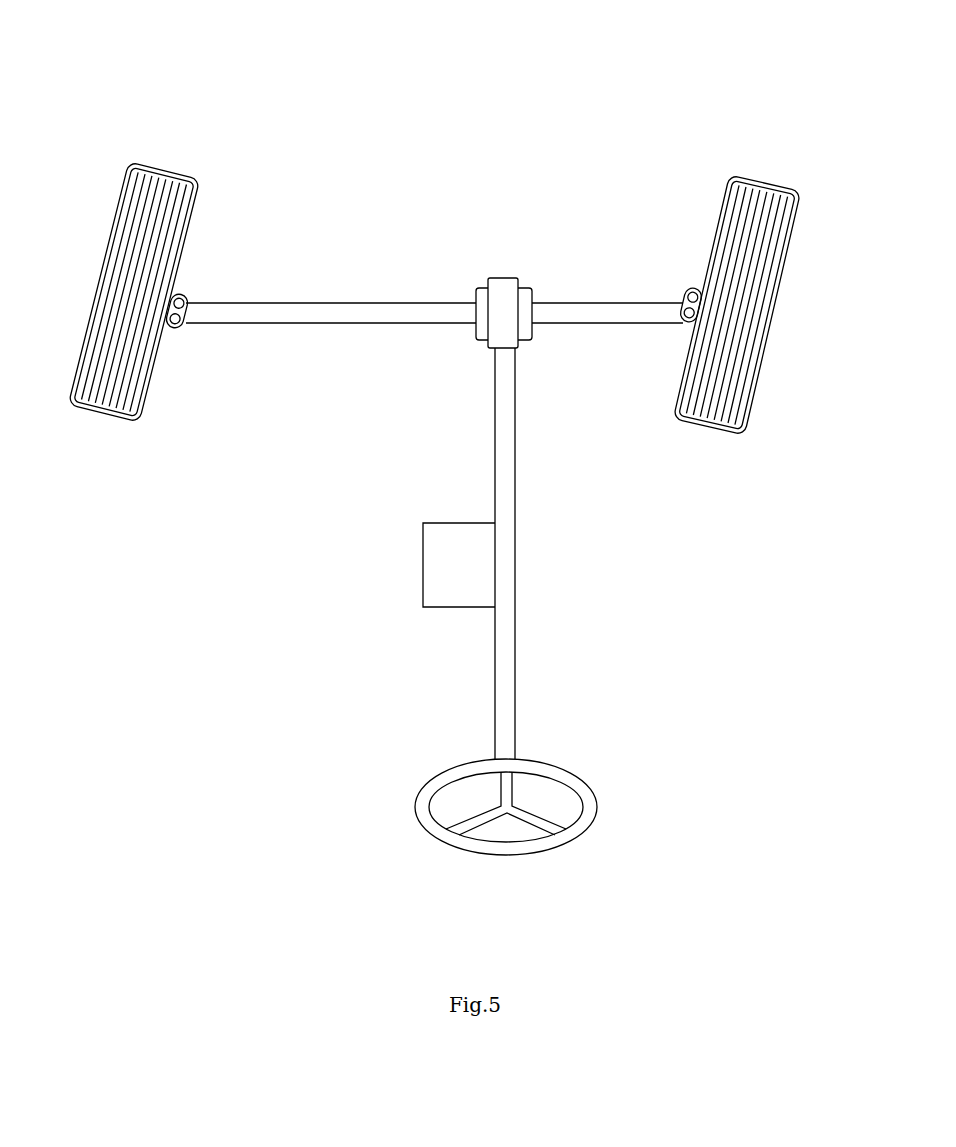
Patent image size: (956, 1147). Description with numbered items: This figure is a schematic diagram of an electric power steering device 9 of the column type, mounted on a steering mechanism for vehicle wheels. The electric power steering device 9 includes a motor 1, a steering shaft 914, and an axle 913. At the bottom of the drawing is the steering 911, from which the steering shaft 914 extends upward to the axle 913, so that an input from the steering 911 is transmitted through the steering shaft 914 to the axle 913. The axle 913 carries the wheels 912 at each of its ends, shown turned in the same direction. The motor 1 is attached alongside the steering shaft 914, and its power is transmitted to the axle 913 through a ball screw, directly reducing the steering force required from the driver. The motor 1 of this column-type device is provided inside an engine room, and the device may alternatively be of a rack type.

The electric power steering device 9 is at (582, 118).
The steering 911 is at (497, 843).
The wheels 912 is at (108, 402).
The axle 913 is at (575, 308).
The steering shaft 914 is at (505, 661).
The motor 1 is at (420, 567).